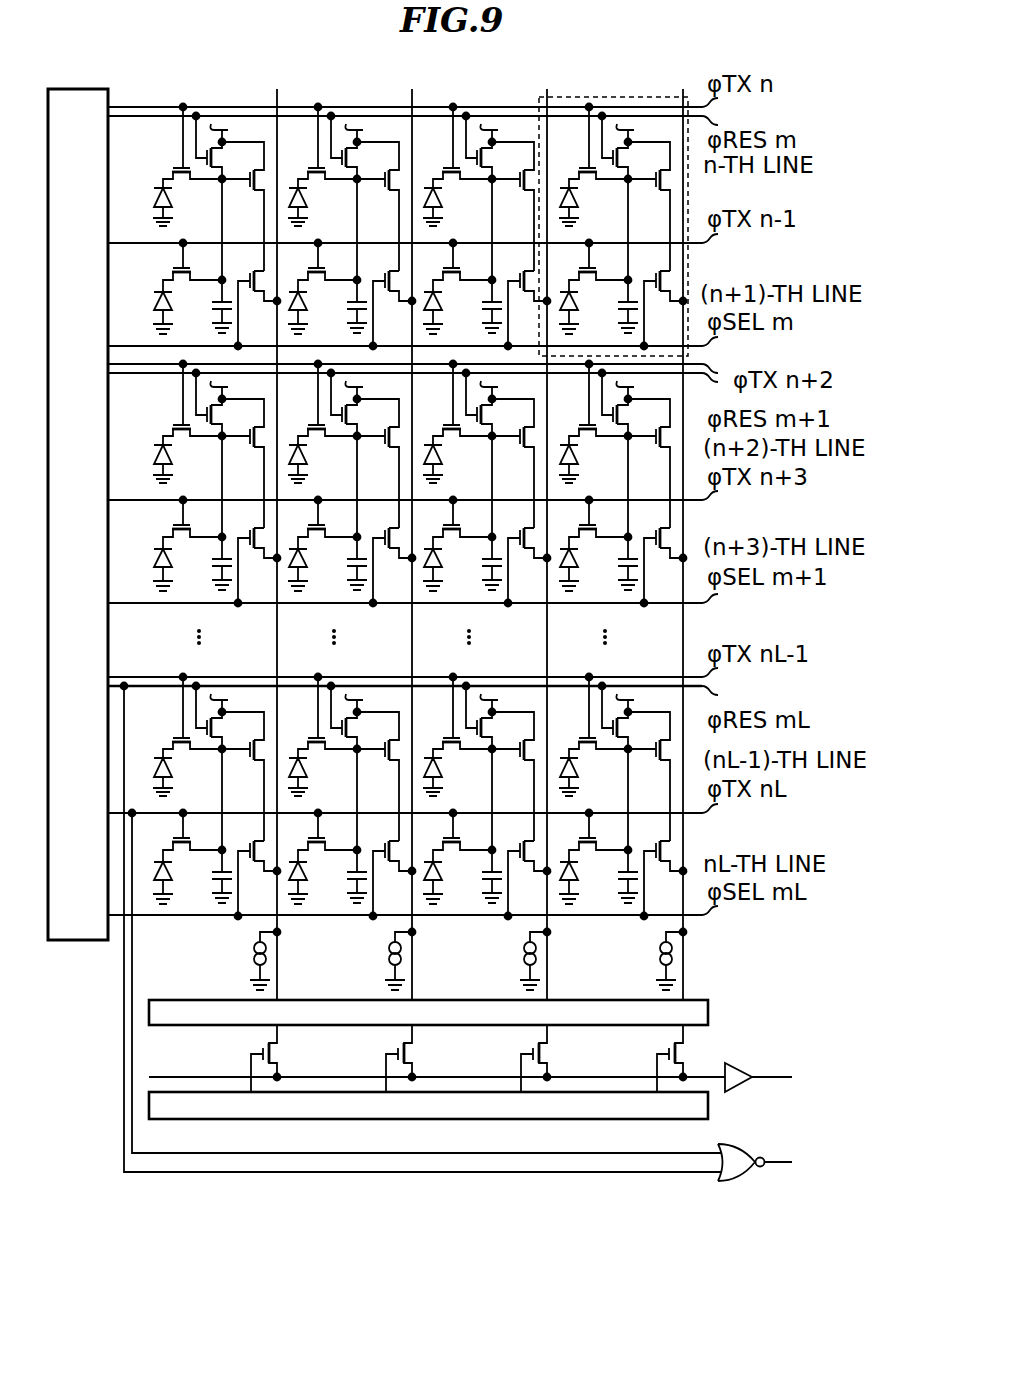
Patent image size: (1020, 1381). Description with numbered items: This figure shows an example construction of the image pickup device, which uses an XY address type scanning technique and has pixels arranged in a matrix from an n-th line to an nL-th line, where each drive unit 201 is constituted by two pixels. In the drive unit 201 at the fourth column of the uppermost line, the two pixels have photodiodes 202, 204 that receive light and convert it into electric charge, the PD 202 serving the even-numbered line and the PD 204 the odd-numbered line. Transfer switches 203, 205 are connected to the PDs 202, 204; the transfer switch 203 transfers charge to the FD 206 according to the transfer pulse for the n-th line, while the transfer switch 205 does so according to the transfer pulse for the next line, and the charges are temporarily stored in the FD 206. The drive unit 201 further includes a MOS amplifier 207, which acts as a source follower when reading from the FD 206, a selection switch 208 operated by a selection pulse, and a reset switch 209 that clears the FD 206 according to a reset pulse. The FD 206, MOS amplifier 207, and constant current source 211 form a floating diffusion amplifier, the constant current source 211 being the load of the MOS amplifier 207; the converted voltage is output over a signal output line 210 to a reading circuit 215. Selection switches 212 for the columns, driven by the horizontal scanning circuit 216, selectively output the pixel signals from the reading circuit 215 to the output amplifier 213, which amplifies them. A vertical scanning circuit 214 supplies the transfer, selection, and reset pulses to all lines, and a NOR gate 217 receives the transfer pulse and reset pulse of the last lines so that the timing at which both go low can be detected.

The drive unit 201 is at (619, 222).
The photodiode 202 is at (575, 195).
The transfer switch 203 is at (578, 166).
The photodiode 204 is at (561, 316).
The transfer switch 205 is at (577, 271).
The floating diffusion 206 is at (632, 300).
The MOS amplifier 207 is at (661, 192).
The selection switch 208 is at (666, 283).
The reset switch 209 is at (612, 152).
The signal output line 210 is at (688, 188).
The constant current source 211 is at (657, 950).
The selection switch 212 is at (669, 1044).
The output amplifier 213 is at (765, 1057).
The vertical scanning circuit 214 is at (90, 88).
The reading circuit 215 is at (710, 1002).
The horizontal scanning circuit 216 is at (710, 1104).
The NOR gate 217 is at (742, 1182).